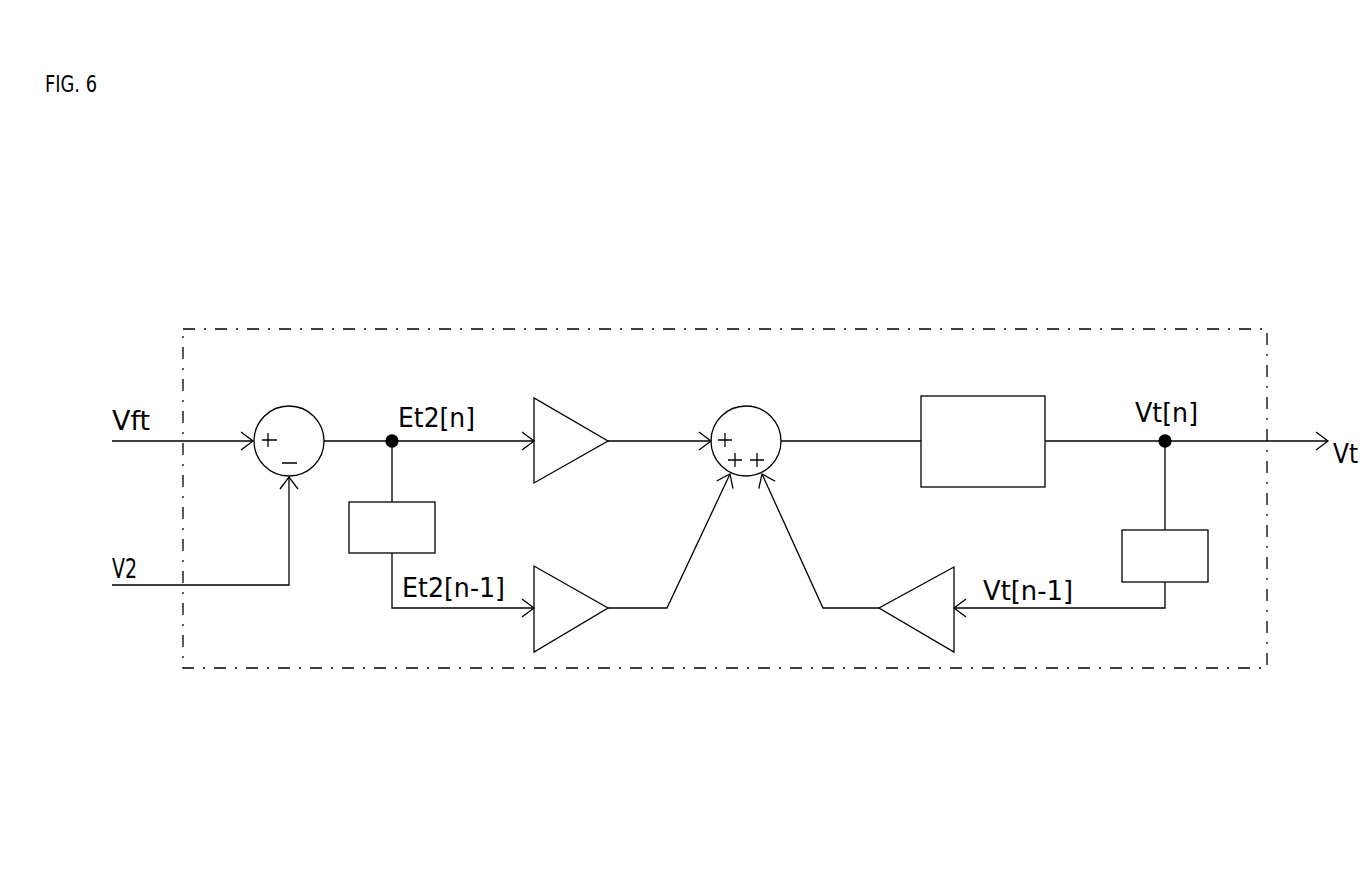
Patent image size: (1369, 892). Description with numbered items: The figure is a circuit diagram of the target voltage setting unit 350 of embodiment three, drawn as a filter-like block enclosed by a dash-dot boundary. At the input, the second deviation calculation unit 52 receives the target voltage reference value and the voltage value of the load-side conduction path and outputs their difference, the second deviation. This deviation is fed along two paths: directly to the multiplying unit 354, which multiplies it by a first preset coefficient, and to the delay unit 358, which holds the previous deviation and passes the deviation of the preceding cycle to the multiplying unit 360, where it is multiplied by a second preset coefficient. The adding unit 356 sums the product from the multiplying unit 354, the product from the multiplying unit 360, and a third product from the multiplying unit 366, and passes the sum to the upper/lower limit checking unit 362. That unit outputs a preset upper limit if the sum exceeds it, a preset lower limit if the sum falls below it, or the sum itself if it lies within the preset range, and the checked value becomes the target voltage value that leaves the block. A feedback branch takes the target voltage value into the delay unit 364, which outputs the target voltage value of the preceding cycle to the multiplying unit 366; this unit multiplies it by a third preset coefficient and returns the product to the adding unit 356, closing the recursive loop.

The target voltage setting unit 350 is at (1133, 329).
The second deviation calculation unit 52 is at (314, 416).
The multiplying unit 354 is at (568, 418).
The adding unit 356 is at (758, 408).
The delay unit 358 is at (410, 502).
The multiplying unit 360 is at (568, 585).
The upper/lower limit checking unit 362 is at (983, 396).
The delay unit 364 is at (1188, 530).
The multiplying unit 366 is at (912, 590).